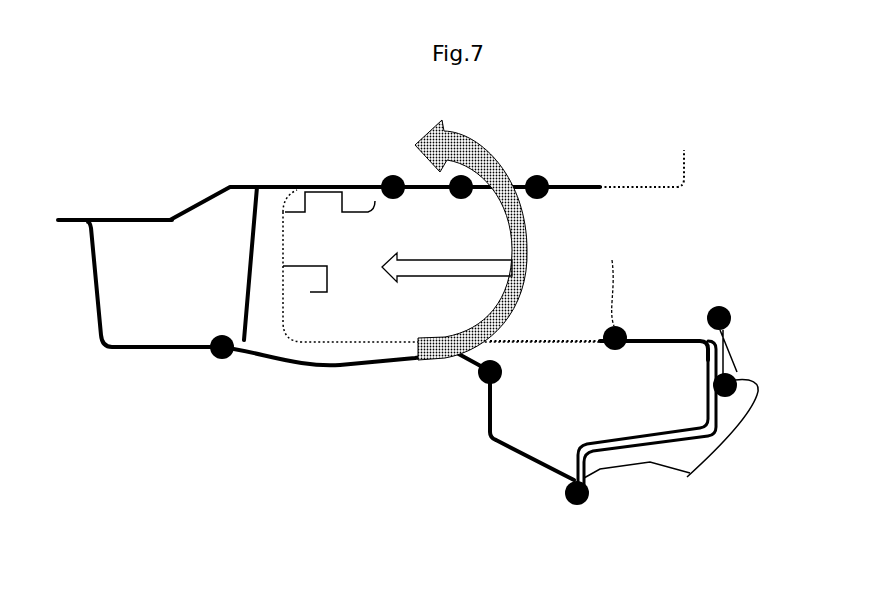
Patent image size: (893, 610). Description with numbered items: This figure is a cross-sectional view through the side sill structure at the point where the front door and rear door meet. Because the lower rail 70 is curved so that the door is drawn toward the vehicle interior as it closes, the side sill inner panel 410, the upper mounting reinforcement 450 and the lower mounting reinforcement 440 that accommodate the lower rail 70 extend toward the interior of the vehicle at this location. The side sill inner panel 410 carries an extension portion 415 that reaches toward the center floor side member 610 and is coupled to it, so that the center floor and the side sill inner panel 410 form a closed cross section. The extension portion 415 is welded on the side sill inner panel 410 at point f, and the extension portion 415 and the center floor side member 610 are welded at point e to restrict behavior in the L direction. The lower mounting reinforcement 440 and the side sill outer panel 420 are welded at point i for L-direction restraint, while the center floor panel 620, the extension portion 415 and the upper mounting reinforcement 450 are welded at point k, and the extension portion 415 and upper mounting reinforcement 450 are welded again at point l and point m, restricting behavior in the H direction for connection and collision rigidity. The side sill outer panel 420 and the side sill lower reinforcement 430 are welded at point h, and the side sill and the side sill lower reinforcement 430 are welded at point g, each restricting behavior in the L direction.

The lower rail 70 is at (336, 290).
The side sill inner panel 410 is at (535, 455).
The extension portion 415 is at (280, 364).
The side sill outer panel 420 is at (665, 442).
The side sill lower reinforcement 430 is at (705, 443).
The lower mounting reinforcement 440 is at (660, 340).
The upper mounting reinforcement 450 is at (686, 148).
The center floor side member 610 is at (93, 298).
The center floor panel 620 is at (197, 205).
The point e is at (221, 360).
The point f is at (483, 385).
The point g is at (578, 505).
The point h is at (754, 398).
The point i is at (719, 306).
The point k is at (393, 175).
The point l is at (465, 175).
The point m is at (540, 175).